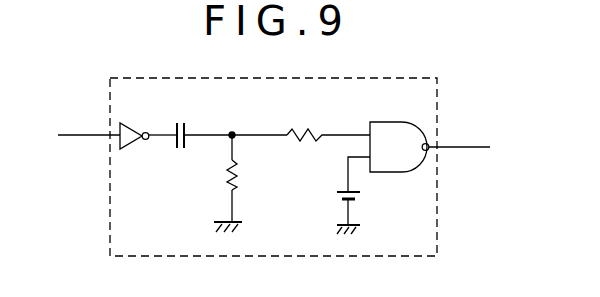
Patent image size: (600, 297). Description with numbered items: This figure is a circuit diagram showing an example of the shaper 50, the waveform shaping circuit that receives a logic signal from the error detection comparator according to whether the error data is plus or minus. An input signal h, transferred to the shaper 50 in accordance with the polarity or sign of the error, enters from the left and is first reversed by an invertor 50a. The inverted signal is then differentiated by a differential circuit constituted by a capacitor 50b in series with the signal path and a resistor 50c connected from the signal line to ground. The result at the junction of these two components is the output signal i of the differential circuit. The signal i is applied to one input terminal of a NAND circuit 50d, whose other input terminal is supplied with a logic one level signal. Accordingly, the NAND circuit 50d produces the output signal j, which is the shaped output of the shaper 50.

The shaper 50 is at (127, 78).
The invertor 50a is at (157, 118).
The capacitor 50b is at (190, 122).
The resistor 50c is at (243, 170).
The NAND circuit 50d is at (385, 122).
The signal h is at (76, 137).
The output signal i is at (262, 135).
The output signal j is at (475, 145).